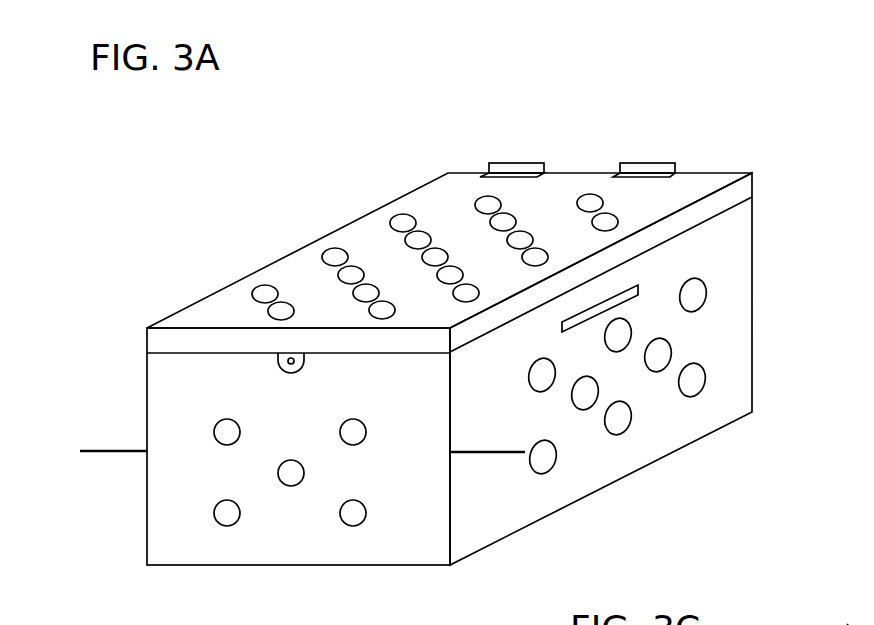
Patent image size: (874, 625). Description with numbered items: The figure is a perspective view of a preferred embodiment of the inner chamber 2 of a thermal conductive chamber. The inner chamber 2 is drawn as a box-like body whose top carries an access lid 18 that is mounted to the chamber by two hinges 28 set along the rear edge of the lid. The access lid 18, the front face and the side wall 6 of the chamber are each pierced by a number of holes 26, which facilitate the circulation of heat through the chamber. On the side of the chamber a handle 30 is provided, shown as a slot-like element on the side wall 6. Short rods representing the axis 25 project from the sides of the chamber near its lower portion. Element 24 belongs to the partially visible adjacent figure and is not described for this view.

In FIG. 3A, the inner chamber 2 is at (496, 331).
In FIG. 3A, the housing side wall 6 is at (752, 367).
In FIG. 3A, the access lid 18 is at (467, 247).
In FIG. 3A, the axis 25 is at (132, 451).
In FIG. 3A, the holes 26 is at (328, 248).
In FIG. 3A, the hinges 28 is at (498, 165).
In FIG. 3A, the handle 30 is at (638, 285).
In FIG. 3C, the cover 24 is at (848, 624).